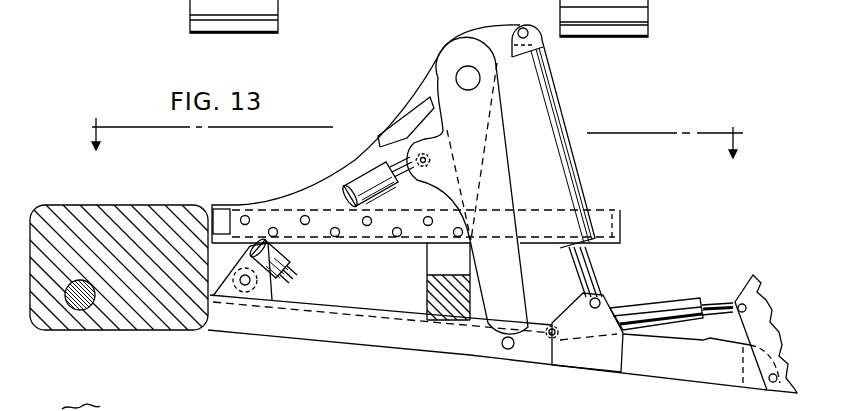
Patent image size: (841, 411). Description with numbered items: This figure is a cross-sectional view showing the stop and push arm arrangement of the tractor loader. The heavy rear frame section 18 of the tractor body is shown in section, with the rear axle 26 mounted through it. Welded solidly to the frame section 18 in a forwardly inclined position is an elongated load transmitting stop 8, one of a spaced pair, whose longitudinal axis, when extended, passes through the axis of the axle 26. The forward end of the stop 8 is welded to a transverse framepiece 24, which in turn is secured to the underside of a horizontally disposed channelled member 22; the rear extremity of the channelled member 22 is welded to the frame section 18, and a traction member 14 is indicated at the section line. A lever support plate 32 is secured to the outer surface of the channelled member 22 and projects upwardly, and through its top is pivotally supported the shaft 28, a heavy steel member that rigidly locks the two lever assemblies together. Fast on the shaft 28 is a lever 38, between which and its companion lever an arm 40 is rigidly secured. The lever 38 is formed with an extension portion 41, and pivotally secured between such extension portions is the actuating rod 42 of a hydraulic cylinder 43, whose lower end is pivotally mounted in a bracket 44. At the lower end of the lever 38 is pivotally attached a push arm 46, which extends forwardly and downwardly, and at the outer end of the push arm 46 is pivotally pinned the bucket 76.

The elongated load transmitting stop 8 is at (300, 333).
The traction member 14 is at (415, 149).
The rear frame section 18 is at (157, 327).
The channelled member 22 is at (219, 206).
The transverse framepiece 24 is at (427, 289).
The rear axle 26 is at (80, 310).
The shaft 28 is at (462, 68).
The lever support plate 32 is at (360, 163).
The lever 38 is at (447, 78).
The arm 40 is at (488, 35).
The extension portion 41 is at (405, 158).
The actuating rod 42 is at (405, 180).
The hydraulic cylinder 43 is at (288, 273).
The bracket 44 is at (225, 293).
The push arm 46 is at (630, 367).
The bucket 76 is at (763, 306).